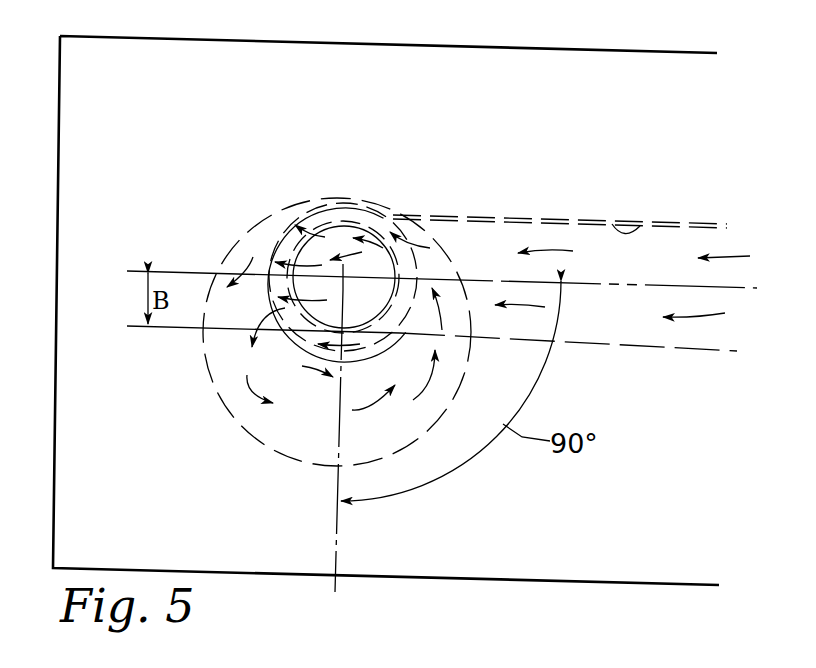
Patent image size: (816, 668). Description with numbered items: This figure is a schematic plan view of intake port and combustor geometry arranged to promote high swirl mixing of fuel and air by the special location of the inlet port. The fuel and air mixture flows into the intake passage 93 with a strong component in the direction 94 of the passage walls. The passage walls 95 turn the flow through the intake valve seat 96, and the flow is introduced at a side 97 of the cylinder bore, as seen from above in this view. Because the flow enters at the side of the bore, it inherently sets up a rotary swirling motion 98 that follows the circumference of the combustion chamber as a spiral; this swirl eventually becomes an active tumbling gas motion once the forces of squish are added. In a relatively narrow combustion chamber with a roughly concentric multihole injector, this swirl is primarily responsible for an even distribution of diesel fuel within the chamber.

The intake passage 93 is at (623, 224).
The direction of the passage walls 94 is at (549, 250).
The passage walls 95 is at (337, 236).
The intake valve seat 96 is at (287, 240).
The side of the cylinder bore 97 is at (302, 199).
The rotary swirling motion 98 is at (275, 390).